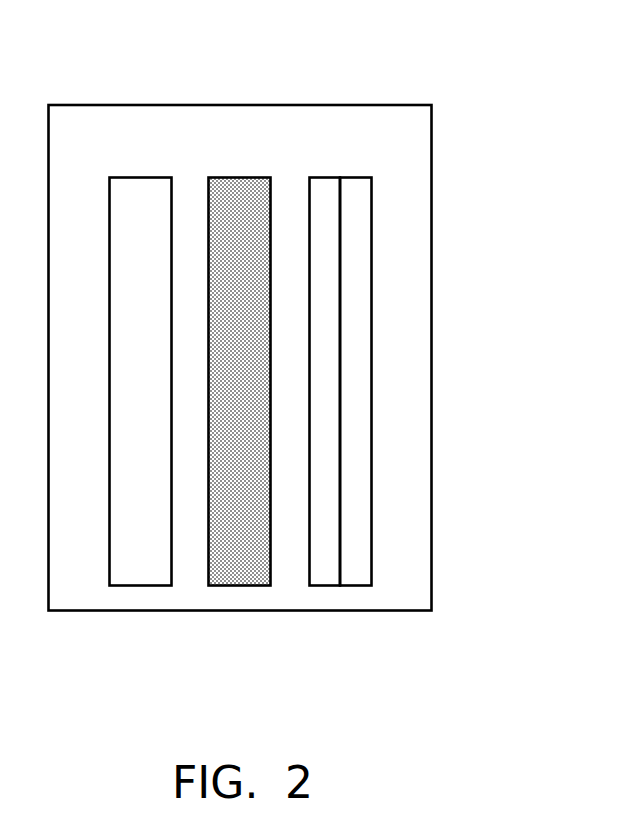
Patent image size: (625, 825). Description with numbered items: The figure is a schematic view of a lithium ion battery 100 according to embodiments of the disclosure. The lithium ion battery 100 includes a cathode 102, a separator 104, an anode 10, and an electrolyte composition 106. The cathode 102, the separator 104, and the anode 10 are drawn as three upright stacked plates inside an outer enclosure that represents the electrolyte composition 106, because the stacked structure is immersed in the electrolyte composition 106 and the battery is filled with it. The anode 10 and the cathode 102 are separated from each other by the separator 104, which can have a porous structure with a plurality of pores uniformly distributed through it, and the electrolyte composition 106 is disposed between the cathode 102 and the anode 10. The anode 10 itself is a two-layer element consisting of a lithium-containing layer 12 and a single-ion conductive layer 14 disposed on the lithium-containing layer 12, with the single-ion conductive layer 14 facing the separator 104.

The lithium ion battery 100 is at (514, 58).
The electrolyte composition 106 is at (398, 154).
The cathode 102 is at (142, 586).
The separator 104 is at (242, 586).
The anode 10 is at (341, 443).
The single-ion conductive layer 14 is at (325, 586).
The lithium-containing layer 12 is at (365, 421).